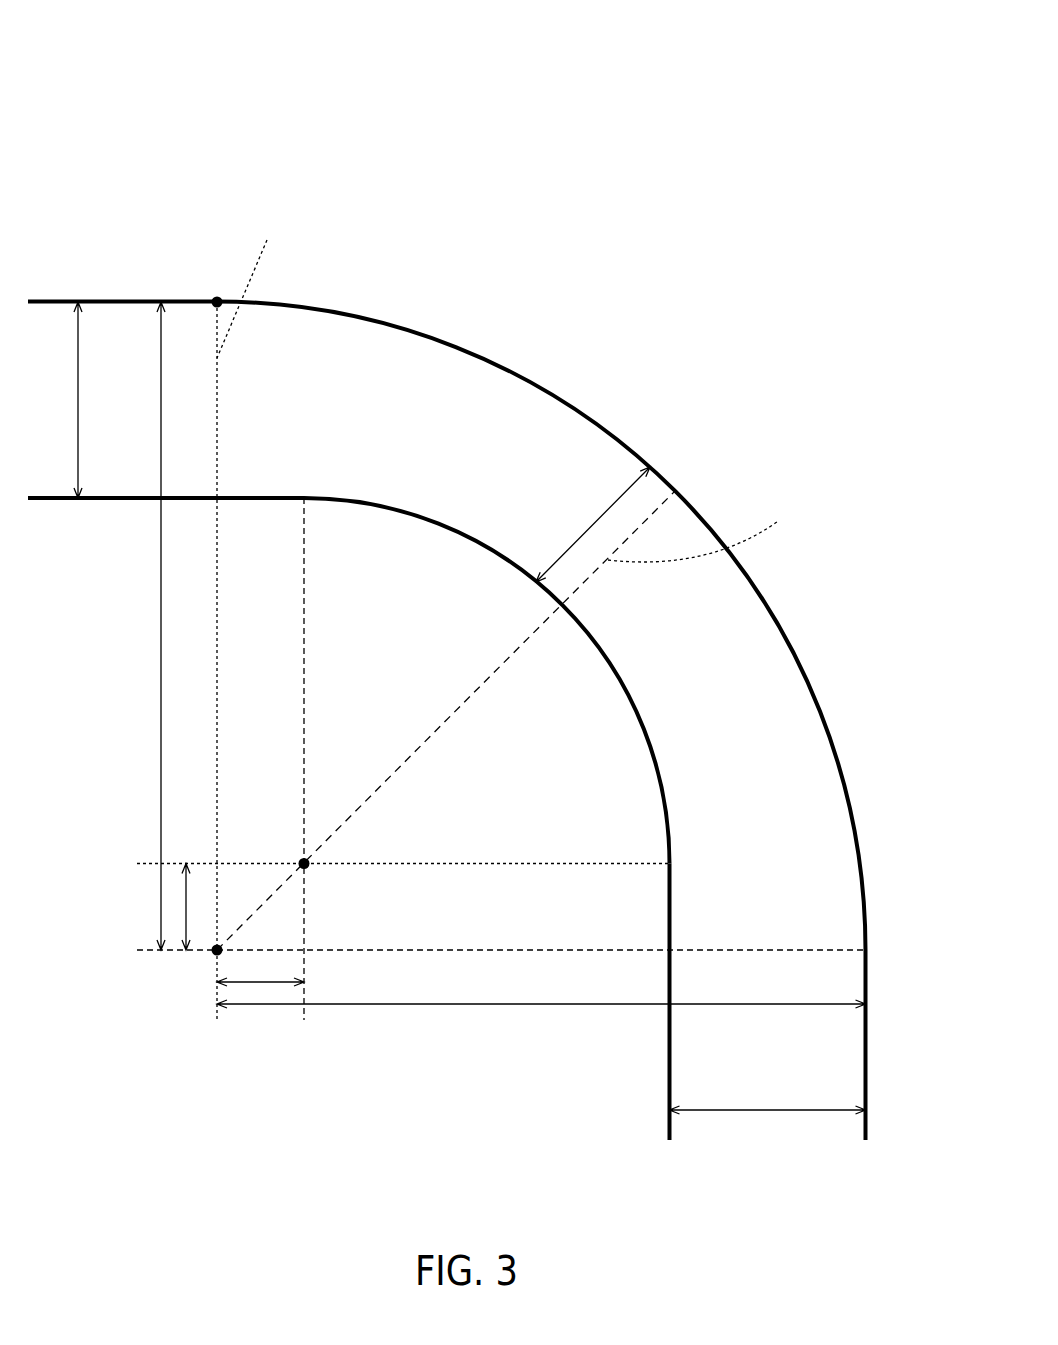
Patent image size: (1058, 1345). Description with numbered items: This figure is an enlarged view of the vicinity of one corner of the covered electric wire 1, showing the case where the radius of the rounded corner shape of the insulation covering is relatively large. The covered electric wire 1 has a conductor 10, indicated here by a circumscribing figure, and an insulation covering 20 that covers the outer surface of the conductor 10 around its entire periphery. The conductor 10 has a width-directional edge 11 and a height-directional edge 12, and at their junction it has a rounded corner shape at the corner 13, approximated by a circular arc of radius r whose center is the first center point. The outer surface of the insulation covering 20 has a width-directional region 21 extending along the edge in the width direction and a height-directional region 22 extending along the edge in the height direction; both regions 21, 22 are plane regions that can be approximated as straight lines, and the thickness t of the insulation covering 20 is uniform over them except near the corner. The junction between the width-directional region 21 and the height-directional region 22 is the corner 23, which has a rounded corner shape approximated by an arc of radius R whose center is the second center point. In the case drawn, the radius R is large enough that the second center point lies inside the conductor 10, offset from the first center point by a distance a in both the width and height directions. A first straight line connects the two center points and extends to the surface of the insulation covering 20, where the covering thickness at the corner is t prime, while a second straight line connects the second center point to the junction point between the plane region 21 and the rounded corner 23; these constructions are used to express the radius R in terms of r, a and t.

The covered electric wire 1 is at (126, 84).
The conductor 10 is at (597, 737).
The width-directional edge 11 is at (203, 498).
The height-directional edge 12 is at (670, 887).
The corner of the conductor 13 is at (487, 540).
The insulation covering 20 is at (262, 415).
The width-directional region 21 is at (125, 301).
The height-directional region 22 is at (867, 1022).
The corner of the insulation covering 23 is at (587, 410).